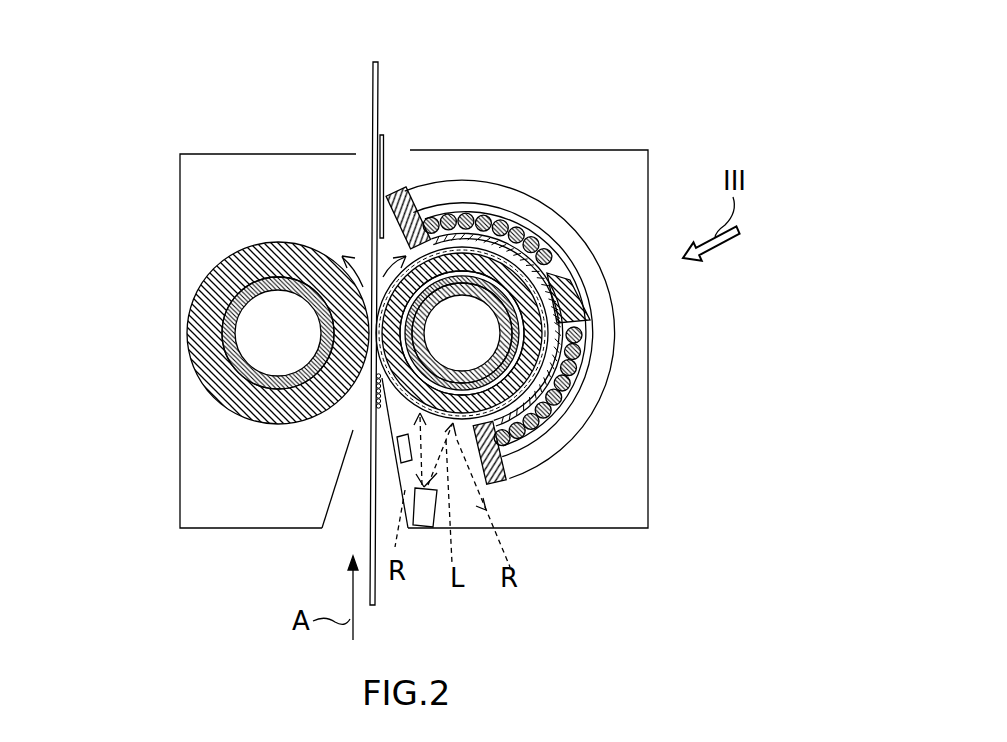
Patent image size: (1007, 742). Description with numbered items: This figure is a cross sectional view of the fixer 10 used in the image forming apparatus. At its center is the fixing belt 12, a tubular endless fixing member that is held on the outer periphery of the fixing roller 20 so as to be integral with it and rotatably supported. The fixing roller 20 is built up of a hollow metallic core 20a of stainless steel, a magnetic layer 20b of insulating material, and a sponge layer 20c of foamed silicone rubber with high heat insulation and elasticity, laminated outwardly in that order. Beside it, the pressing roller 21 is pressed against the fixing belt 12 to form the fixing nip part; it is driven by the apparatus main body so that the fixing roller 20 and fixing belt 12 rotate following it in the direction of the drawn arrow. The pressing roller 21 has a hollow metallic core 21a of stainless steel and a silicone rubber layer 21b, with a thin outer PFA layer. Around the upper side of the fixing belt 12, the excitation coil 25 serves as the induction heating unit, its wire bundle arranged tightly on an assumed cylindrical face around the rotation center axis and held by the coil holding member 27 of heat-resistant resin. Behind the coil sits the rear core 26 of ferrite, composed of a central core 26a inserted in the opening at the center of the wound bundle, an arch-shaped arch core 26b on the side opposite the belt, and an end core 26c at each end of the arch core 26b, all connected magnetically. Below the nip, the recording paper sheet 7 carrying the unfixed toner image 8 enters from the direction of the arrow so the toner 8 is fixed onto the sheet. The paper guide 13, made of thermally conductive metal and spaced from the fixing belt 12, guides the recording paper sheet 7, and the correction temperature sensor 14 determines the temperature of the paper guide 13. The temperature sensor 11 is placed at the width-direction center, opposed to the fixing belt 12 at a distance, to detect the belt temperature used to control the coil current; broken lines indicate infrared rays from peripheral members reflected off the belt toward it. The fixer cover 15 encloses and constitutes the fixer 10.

The recording paper sheet 7 is at (372, 596).
The unfixed toner image 8 is at (383, 157).
The fixer 10 is at (120, 245).
The temperature sensor 11 is at (423, 527).
The fixing belt 12 is at (533, 467).
The paper guide 13 is at (397, 475).
The correction temperature sensor 14 is at (400, 458).
The fixer cover 15 is at (535, 528).
The fixing roller 20 is at (722, 405).
The hollow metallic core 20a is at (545, 375).
The magnetic layer 20b is at (553, 410).
The sponge layer 20c is at (560, 445).
The pressing roller 21 is at (78, 382).
The hollow metallic core 21a is at (262, 405).
The silicone rubber layer 21b is at (252, 384).
The excitation coil 25 is at (575, 378).
The rear core 26 is at (615, 97).
The central core 26a is at (563, 276).
The arch core 26b is at (496, 193).
The end core 26c is at (418, 192).
The coil holding member 27 is at (586, 342).